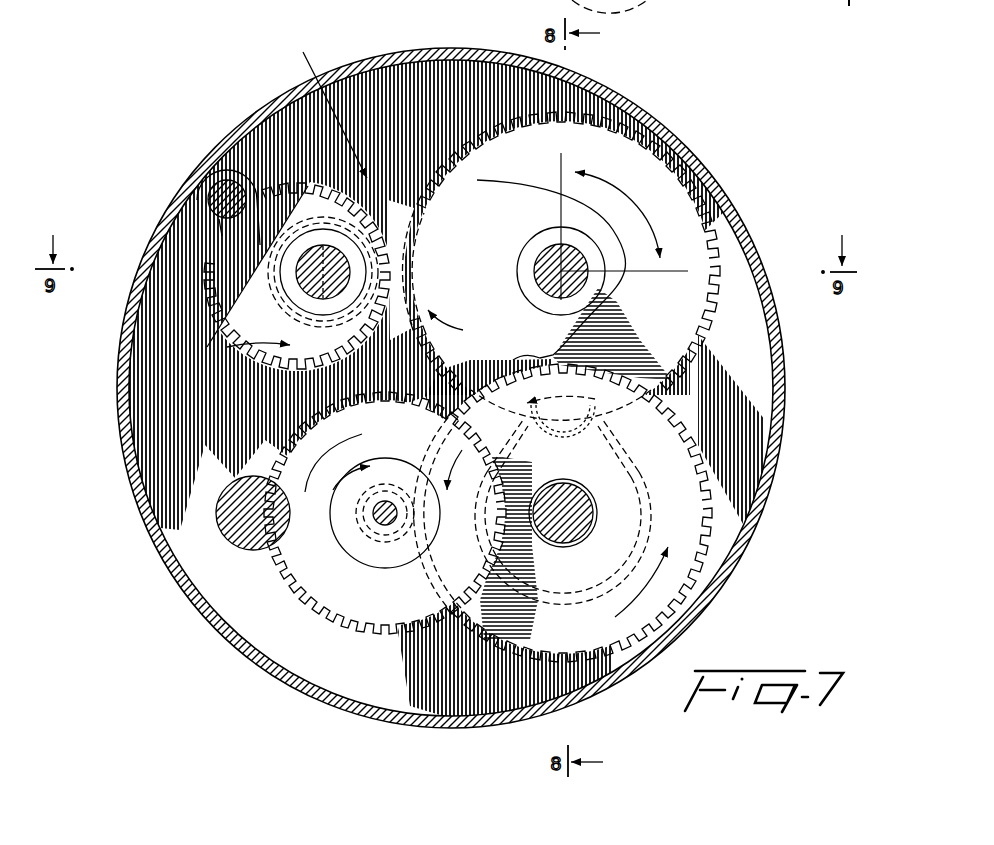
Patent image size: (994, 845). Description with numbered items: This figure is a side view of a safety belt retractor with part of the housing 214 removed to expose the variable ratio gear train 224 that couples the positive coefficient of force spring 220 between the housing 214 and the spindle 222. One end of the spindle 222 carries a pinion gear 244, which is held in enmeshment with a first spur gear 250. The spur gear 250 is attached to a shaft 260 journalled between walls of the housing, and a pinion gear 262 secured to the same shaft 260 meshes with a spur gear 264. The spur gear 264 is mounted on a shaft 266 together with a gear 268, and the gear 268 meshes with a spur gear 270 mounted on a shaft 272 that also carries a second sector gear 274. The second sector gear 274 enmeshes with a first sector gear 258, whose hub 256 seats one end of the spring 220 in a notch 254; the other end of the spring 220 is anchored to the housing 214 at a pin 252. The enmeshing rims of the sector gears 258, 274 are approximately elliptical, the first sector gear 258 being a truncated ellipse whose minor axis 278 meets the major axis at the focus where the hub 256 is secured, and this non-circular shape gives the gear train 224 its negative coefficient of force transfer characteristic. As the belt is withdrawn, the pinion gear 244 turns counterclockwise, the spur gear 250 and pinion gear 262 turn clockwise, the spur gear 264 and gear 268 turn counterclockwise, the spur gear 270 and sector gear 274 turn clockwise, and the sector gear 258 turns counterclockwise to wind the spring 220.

The housing 214 is at (673, 137).
The spring 220 is at (259, 243).
The spindle 222 is at (243, 497).
The gear train 224 is at (323, 104).
The pinion gear 244 is at (232, 553).
The first spur gear 250 is at (300, 433).
The pin 252 is at (214, 196).
The notch 254 is at (300, 230).
The hub 256 is at (306, 246).
The first sector gear 258 is at (210, 343).
The shaft 260 is at (383, 526).
The pinion gear 262 is at (346, 552).
The spur gear 264 is at (520, 640).
The shaft 266 is at (592, 513).
The gear 268 is at (640, 476).
The spur gear 270 is at (687, 320).
The shaft 272 is at (542, 250).
The second sector gear 274 is at (460, 213).
The minor axis 278 is at (613, 5).